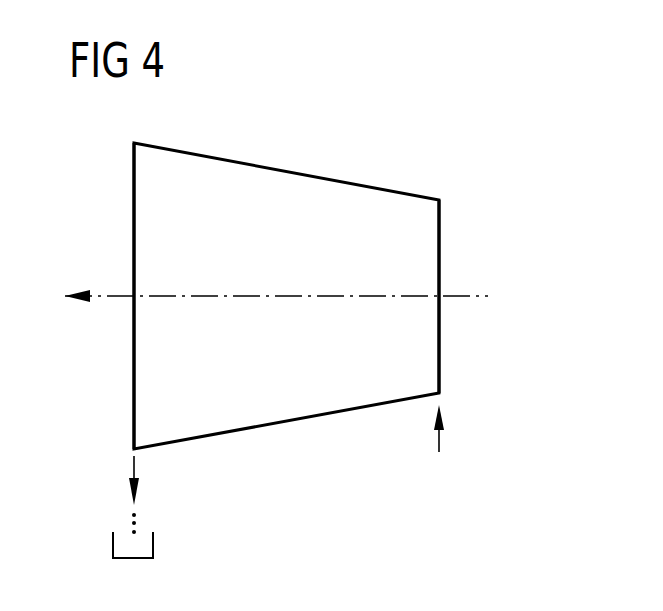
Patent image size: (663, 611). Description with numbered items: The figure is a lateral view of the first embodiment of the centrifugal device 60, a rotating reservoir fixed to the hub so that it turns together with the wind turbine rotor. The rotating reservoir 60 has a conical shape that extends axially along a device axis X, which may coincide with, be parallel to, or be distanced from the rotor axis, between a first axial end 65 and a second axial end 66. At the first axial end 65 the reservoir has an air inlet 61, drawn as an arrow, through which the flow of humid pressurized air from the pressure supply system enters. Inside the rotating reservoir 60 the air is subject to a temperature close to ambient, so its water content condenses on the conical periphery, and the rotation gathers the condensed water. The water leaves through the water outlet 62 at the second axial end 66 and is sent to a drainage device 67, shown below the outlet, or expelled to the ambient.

The centrifugal device 60 is at (458, 229).
The device axis X is at (473, 296).
The first axial end 65 is at (440, 340).
The air inlet 61 is at (439, 442).
The second axial end 66 is at (134, 382).
The water outlet 62 is at (134, 466).
The drainage device 67 is at (153, 541).